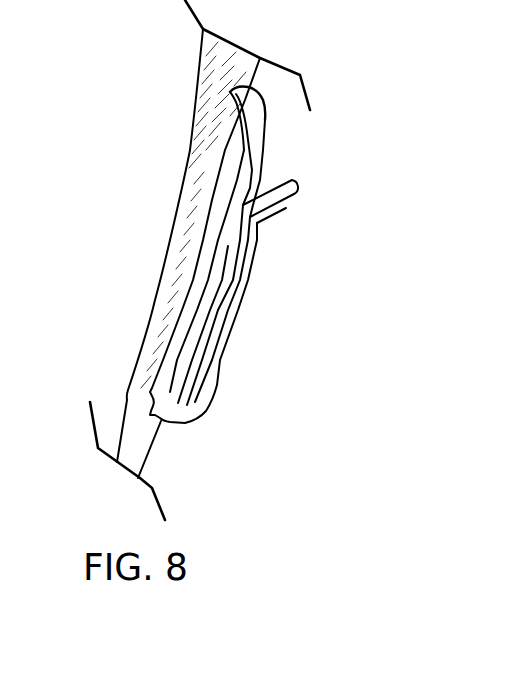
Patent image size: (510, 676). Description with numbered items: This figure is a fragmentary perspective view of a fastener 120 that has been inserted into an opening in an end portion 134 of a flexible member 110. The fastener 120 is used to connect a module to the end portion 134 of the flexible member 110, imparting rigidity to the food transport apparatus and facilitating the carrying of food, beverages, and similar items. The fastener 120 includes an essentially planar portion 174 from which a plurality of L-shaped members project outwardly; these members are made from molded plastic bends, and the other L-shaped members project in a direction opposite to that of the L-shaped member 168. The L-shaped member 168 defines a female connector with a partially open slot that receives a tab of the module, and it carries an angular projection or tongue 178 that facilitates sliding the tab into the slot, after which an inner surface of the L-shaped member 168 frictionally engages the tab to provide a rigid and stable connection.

The flexible member 110 is at (148, 210).
The fastener 120 is at (246, 240).
The end portion 134 is at (153, 306).
The essentially planar portion 174 is at (247, 104).
The angular projection or tongue 178 is at (280, 198).
The L-shaped member 168 is at (241, 302).